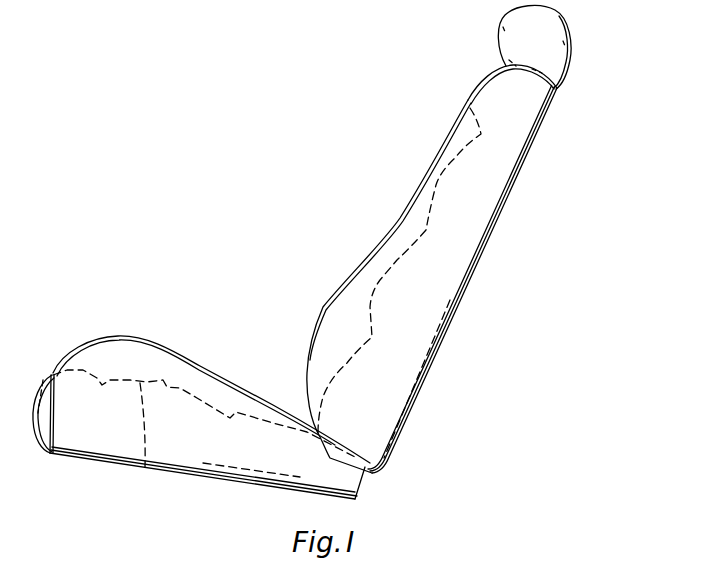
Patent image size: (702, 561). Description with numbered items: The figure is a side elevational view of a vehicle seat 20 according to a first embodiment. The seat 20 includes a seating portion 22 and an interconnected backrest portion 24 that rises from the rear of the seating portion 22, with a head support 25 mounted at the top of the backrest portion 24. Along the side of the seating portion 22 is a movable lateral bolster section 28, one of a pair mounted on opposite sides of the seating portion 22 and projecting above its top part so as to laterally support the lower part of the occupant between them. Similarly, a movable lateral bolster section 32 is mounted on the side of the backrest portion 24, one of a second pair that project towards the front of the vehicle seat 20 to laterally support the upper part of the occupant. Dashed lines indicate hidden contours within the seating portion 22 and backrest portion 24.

The vehicle seat 20 is at (641, 187).
The seating portion 22 is at (143, 472).
The backrest portion 24 is at (380, 283).
The headrest 25 is at (552, 63).
The left-hand bolster section 28 is at (123, 365).
The left-hand bolster section 32 is at (442, 270).